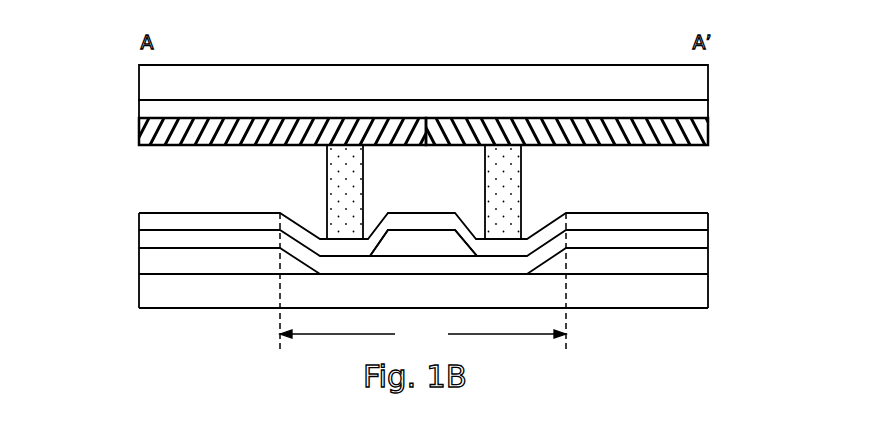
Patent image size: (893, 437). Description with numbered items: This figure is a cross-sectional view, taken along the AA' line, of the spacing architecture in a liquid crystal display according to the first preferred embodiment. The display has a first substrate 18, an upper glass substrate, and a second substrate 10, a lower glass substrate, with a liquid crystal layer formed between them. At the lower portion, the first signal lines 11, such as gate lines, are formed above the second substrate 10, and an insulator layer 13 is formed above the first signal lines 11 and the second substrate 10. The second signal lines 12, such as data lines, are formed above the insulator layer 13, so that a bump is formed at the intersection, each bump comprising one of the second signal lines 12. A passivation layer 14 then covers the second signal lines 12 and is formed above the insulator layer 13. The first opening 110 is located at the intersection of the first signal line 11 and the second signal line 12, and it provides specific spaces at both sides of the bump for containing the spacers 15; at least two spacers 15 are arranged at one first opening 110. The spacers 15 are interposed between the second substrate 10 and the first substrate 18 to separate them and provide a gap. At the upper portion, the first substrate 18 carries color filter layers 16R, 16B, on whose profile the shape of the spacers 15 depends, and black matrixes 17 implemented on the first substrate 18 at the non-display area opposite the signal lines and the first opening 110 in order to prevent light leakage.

The second substrate 10 is at (168, 292).
The first signal line 11 is at (157, 265).
The second signal line 12 is at (432, 247).
The insulator layer 13 is at (150, 240).
The passivation layer 14 is at (150, 223).
The spacer 15 is at (502, 178).
The color filter layer 16B is at (140, 138).
The color filter layer 16R is at (708, 136).
The black matrix 17 is at (150, 110).
The first substrate 18 is at (150, 85).
The first opening 110 is at (423, 283).